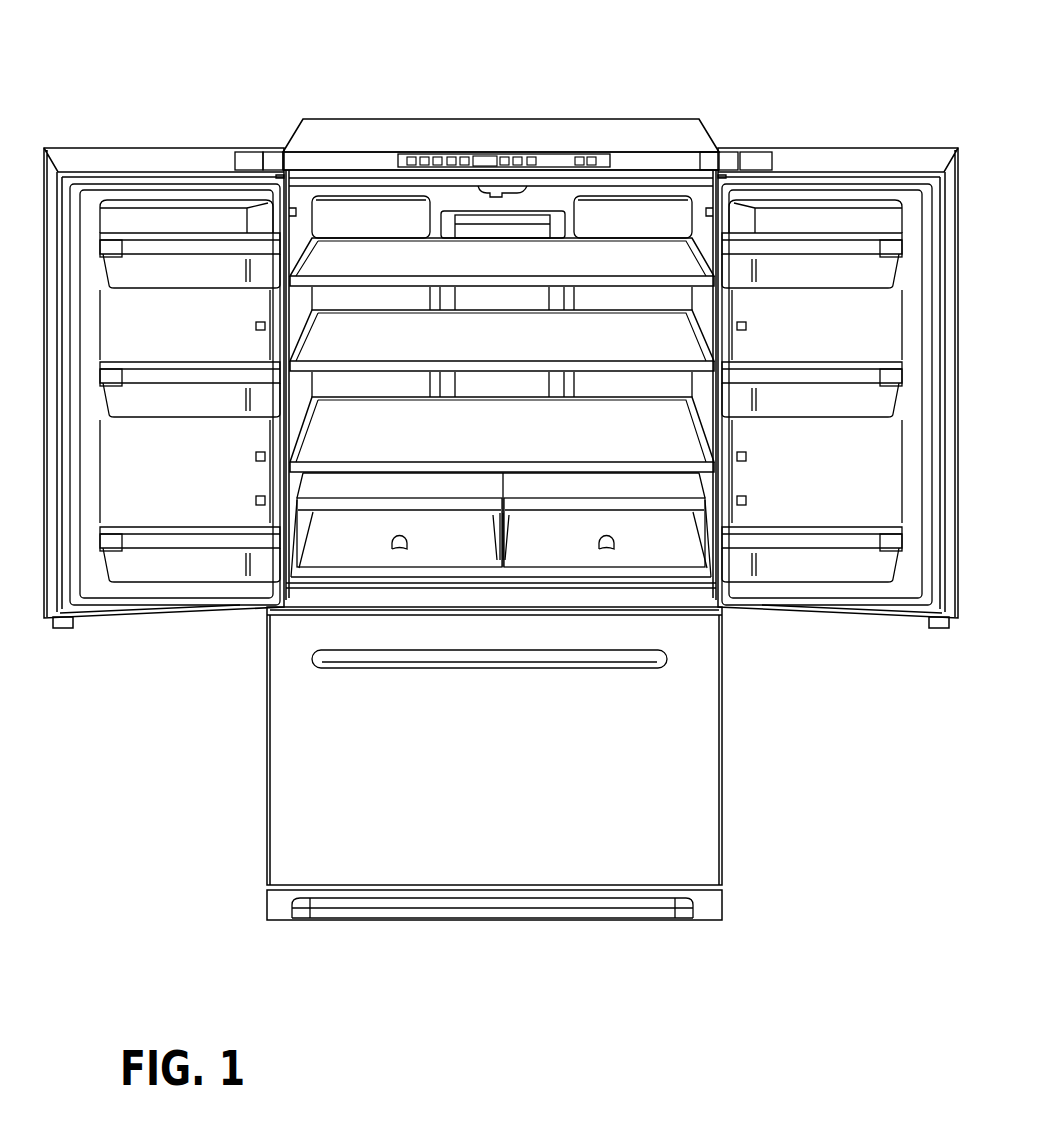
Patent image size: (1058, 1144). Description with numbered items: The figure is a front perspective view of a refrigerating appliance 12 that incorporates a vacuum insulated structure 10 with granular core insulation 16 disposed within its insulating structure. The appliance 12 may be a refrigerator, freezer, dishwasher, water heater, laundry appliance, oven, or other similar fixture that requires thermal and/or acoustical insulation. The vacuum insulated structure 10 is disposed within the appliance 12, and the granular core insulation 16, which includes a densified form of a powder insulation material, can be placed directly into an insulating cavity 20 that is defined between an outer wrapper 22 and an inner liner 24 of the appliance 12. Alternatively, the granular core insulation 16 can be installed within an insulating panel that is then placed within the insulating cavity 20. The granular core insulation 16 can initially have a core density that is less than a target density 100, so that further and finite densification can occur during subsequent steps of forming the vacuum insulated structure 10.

The appliance 12 is at (451, 81).
The vacuum insulated structure 10 is at (334, 116).
The insulating cavity 20 is at (353, 160).
The target density 100 is at (622, 136).
The inner liner 24 is at (301, 200).
The outer wrapper 22 is at (687, 137).
The granular core insulation 16 is at (307, 527).